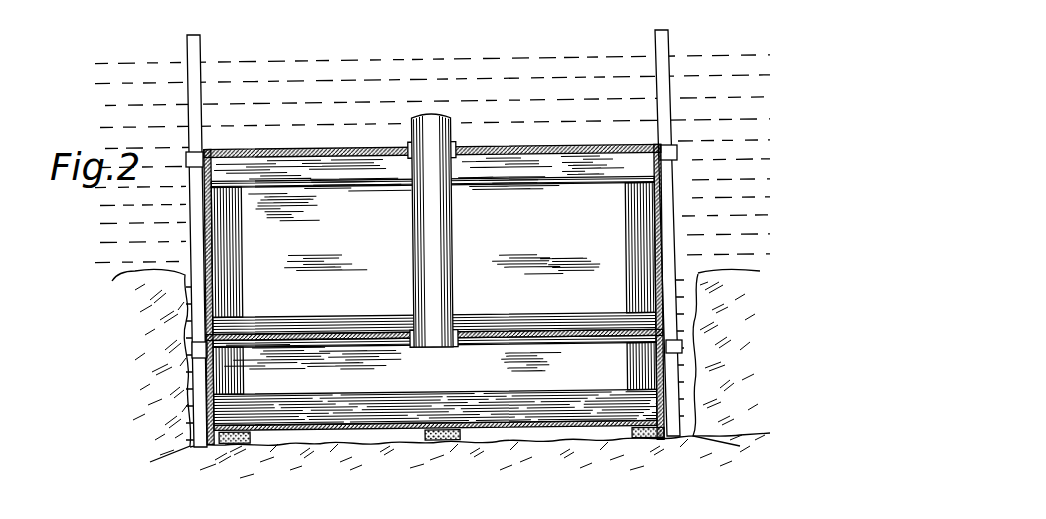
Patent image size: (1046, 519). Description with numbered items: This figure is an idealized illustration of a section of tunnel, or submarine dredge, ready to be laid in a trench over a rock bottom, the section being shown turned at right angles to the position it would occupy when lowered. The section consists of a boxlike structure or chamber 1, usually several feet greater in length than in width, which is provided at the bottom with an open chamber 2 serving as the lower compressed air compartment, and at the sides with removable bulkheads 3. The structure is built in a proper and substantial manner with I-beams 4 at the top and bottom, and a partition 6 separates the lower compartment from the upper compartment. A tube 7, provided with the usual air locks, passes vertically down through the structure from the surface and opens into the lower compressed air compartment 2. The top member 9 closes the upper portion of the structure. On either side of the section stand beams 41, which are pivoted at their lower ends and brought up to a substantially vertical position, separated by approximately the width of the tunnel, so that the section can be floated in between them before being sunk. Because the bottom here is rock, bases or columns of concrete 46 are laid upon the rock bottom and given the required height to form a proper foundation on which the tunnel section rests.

The boxlike structure or chamber 1 is at (327, 251).
The open chamber 2 is at (435, 368).
The removable bulkheads 3 is at (662, 233).
The I-beams 4 is at (602, 170).
The partition 6 is at (380, 339).
The tube 7 is at (452, 233).
The top plate 9 is at (373, 156).
The beams 41 is at (200, 45).
The bases or columns of concrete 46 is at (243, 443).